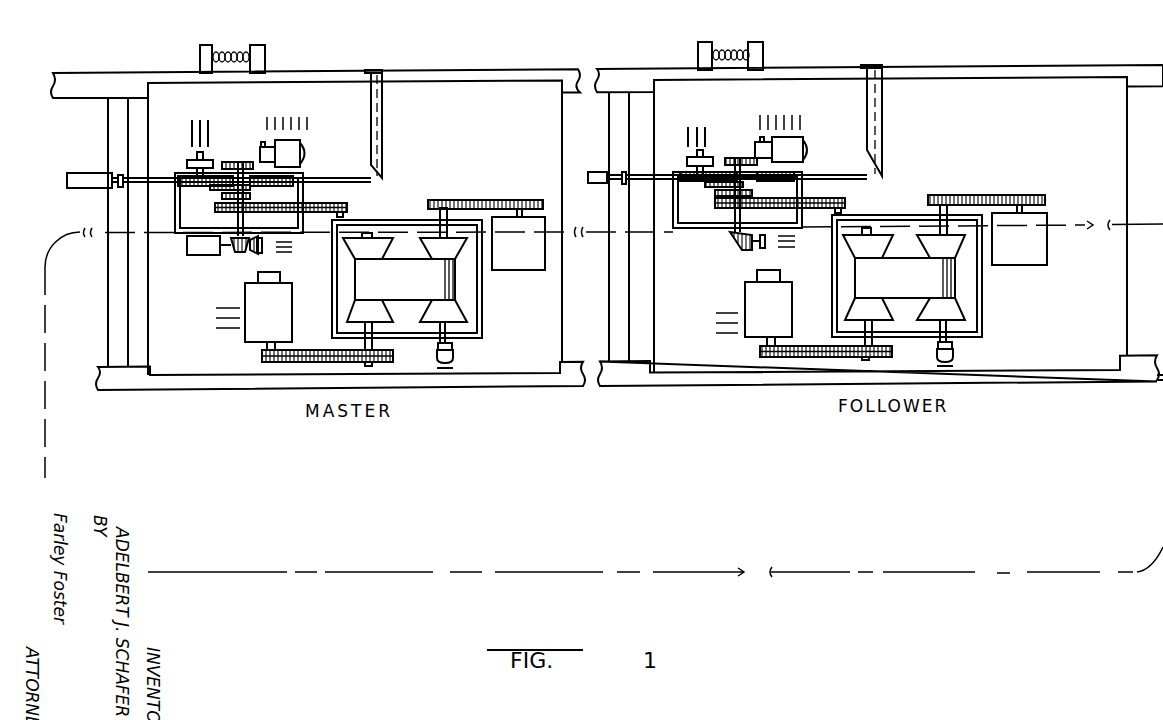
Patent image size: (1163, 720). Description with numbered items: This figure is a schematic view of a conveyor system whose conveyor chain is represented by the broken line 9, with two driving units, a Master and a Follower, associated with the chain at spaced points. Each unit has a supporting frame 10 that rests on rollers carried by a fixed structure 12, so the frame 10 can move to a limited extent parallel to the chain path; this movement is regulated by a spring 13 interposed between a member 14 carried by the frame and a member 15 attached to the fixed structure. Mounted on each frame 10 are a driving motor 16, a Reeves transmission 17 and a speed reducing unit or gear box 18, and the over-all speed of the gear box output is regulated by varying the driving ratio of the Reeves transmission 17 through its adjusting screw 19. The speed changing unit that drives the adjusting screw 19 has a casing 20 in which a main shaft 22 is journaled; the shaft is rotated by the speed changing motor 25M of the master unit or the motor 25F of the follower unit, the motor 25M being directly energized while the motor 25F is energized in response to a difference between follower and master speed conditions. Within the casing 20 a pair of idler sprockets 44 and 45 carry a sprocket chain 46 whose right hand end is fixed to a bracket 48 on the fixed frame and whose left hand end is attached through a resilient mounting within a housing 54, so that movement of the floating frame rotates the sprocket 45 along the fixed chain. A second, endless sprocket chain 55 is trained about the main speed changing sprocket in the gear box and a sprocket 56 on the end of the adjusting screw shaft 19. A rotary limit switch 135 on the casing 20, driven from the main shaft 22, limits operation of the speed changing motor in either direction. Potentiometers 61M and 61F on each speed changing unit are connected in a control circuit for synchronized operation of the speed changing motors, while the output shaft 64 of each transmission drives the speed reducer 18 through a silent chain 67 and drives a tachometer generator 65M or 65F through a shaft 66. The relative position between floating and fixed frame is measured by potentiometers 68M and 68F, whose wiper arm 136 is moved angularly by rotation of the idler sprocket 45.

The conveyor chain 9 is at (982, 562).
The supporting frame 10 is at (133, 382).
The fixed structure 12 is at (627, 374).
The spring 13 is at (229, 51).
The member carried by the frame 14 is at (265, 56).
The member attached to the fixed structure 15 is at (200, 57).
The driving motor 16 is at (278, 321).
The Reeves transmission 17 is at (483, 306).
The speed reducing unit or gear box 18 is at (512, 262).
The adjusting screw 19 is at (349, 212).
The casing 20 is at (303, 190).
The main shaft 22 is at (243, 217).
The speed changing motor of the master unit 25M is at (309, 151).
The speed changing motor of the follower unit 25F is at (810, 148).
The idler sprocket 44 is at (257, 184).
The idler sprocket 45 is at (193, 185).
The sprocket chain 46 is at (315, 179).
The bracket 48 is at (884, 138).
The cylinder or housing 54 is at (80, 173).
The second sprocket chain 55 is at (792, 241).
The sprocket 56 is at (838, 201).
The potentiometer 61M is at (262, 250).
The potentiometer 61F is at (733, 252).
The output shaft 64 is at (437, 223).
The tachometer generator 65M is at (454, 356).
The tachometer generator 65F is at (954, 352).
The shaft 66 is at (447, 329).
The silent type chain 67 is at (483, 200).
The potentiometer 68M is at (189, 158).
The potentiometer 68F is at (692, 153).
The rotary type limit switch 135 is at (207, 252).
The wiper arm 136 is at (188, 155).